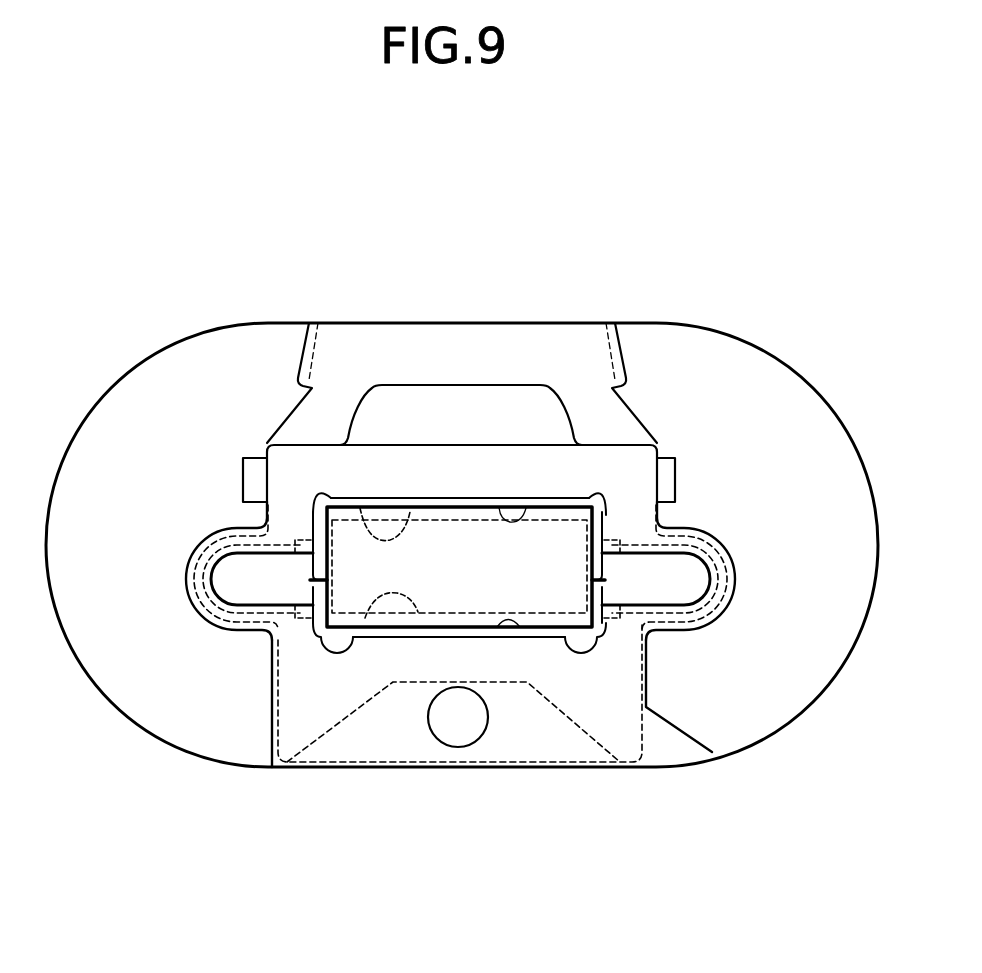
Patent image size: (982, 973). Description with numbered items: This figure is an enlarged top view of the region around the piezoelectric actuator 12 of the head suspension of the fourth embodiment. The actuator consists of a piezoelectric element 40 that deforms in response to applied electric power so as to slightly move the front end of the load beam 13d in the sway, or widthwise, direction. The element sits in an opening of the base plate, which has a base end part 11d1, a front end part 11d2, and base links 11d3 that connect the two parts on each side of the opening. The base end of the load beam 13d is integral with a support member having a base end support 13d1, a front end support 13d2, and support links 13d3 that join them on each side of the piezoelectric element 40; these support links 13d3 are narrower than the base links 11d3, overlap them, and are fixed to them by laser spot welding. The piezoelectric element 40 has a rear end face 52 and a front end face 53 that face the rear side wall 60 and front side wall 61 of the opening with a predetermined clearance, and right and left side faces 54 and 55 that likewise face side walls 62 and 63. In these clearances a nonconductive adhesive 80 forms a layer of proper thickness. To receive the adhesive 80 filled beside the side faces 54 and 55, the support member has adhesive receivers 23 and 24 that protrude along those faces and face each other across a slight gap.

The load beam 13d is at (482, 362).
The front end part 11d2 is at (570, 470).
The piezoelectric actuator 12 is at (493, 481).
The base links 11d3 is at (193, 562).
The base end part 11d1 is at (615, 700).
The support links 13d3 is at (185, 586).
The adhesive receiver 23 is at (310, 588).
The adhesive receiver 24 is at (312, 570).
The piezoelectric element 40 is at (481, 581).
The front end face 53 is at (380, 506).
The side wall 63 is at (318, 512).
The side wall 62 is at (593, 513).
The front side wall 61 is at (526, 508).
The nonconductive adhesive 80 is at (600, 503).
The rear end face 52 is at (385, 639).
The side face 55 is at (313, 613).
The side face 54 is at (600, 617).
The rear side wall 60 is at (502, 620).
The front end support 13d2 is at (360, 508).
The base end support 13d1 is at (355, 632).